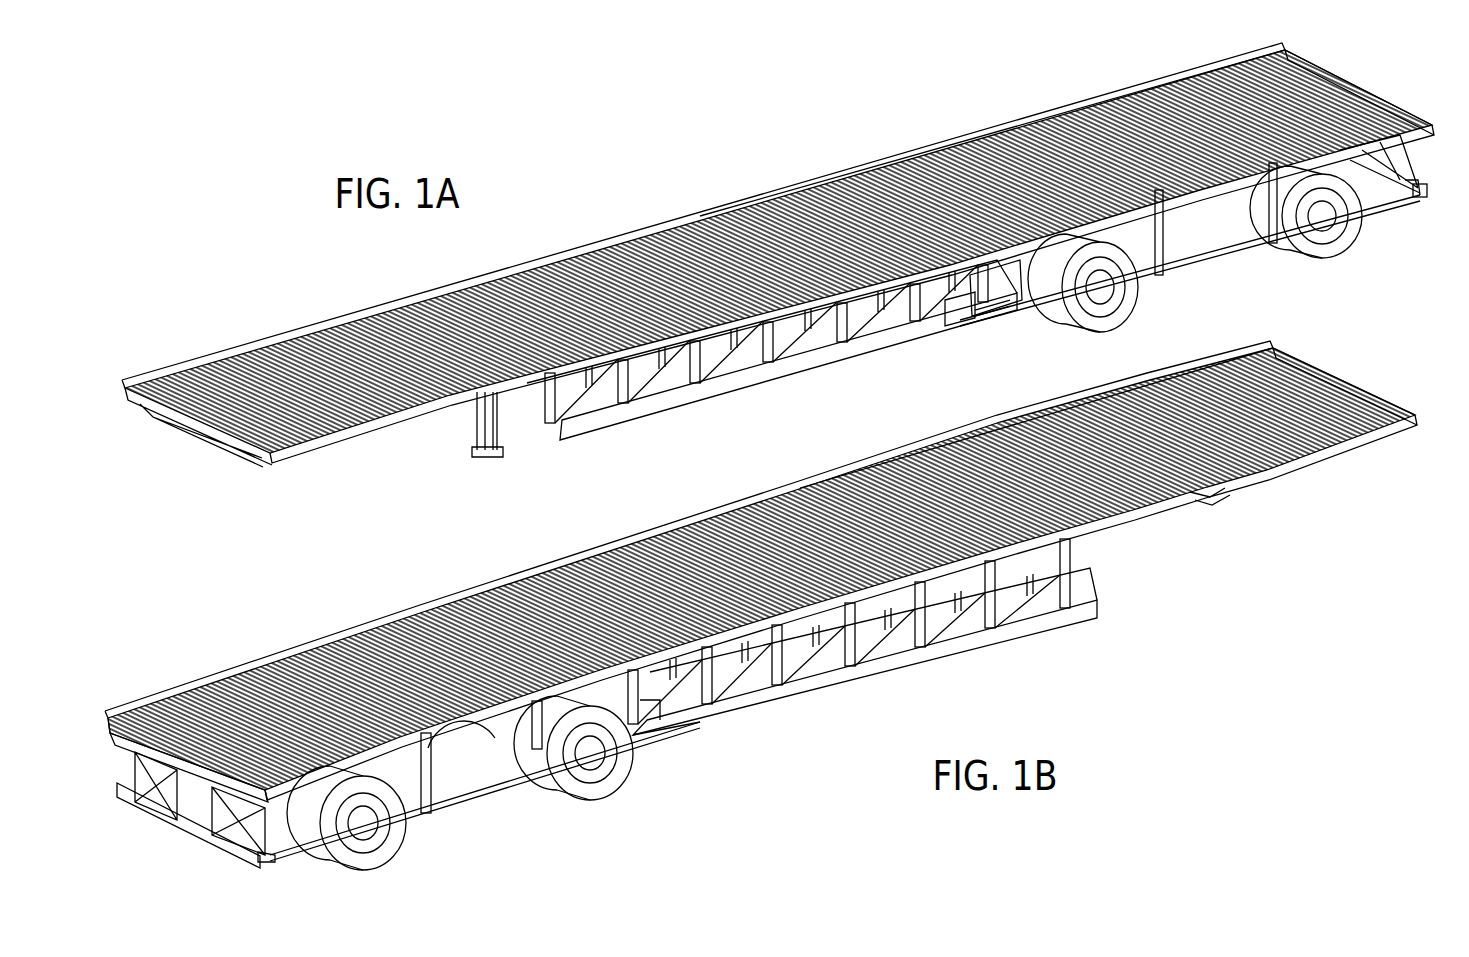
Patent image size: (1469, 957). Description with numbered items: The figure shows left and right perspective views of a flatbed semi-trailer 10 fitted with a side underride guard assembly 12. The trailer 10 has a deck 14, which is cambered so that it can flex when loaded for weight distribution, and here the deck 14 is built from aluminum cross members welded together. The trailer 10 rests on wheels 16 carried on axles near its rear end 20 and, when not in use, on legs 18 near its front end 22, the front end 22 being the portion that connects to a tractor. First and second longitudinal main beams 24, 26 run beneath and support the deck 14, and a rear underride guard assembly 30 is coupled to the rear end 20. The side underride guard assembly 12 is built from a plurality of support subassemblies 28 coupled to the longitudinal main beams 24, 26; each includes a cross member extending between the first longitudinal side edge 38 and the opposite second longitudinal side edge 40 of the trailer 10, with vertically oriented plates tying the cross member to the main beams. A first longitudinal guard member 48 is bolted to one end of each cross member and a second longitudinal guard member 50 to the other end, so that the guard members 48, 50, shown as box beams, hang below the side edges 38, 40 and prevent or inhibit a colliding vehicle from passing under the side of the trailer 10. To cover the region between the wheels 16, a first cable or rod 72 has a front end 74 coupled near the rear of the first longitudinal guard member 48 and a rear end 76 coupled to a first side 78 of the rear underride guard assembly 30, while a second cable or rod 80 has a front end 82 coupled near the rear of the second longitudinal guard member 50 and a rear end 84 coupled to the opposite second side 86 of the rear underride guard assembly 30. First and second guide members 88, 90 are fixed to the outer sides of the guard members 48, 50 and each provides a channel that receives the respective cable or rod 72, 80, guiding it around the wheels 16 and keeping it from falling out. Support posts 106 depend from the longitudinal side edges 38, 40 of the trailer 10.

In FIG. 1A, the flatbed semi-trailer 10 is at (922, 122).
In FIG. 1B, the flatbed semi-trailer 10 is at (1267, 478).
In FIG. 1A, the side underride guard assembly 12 is at (1000, 330).
In FIG. 1B, the side underride guard assembly 12 is at (1084, 609).
In FIG. 1A, the deck 14 is at (703, 207).
In FIG. 1B, the deck 14 is at (1302, 362).
In FIG. 1A, the wheels 16 is at (1118, 322).
In FIG. 1B, the wheels 16 is at (386, 860).
In FIG. 1A, the legs 18 is at (487, 458).
In FIG. 1A, the rear end 20 is at (1313, 62).
In FIG. 1B, the rear end 20 is at (143, 690).
In FIG. 1A, the front end 22 is at (250, 470).
In FIG. 1B, the front end 22 is at (1408, 440).
In FIG. 1B, the first longitudinal main beam 24 is at (1117, 527).
In FIG. 1A, the second longitudinal main beam 26 is at (797, 345).
In FIG. 1A, the support subassemblies 28 is at (535, 428).
In FIG. 1B, the support subassemblies 28 is at (645, 730).
In FIG. 1A, the rear underride guard assembly 30 is at (1424, 160).
In FIG. 1B, the rear underride guard assembly 30 is at (170, 828).
In FIG. 1A, the first longitudinal side edge 38 is at (270, 328).
In FIG. 1B, the first longitudinal side edge 38 is at (1217, 487).
In FIG. 1A, the second longitudinal side edge 40 is at (363, 440).
In FIG. 1B, the second longitudinal side edge 40 is at (338, 632).
In FIG. 1B, the first longitudinal guard member 48 is at (920, 640).
In FIG. 1A, the second longitudinal guard member 50 is at (697, 395).
In FIG. 1B, the first cable or rod 72 is at (482, 797).
In FIG. 1B, the front end of first cable or rod 74 is at (715, 722).
In FIG. 1B, the rear end of first cable or rod 76 is at (262, 862).
In FIG. 1B, the first side of rear underride guard assembly 78 is at (233, 863).
In FIG. 1A, the second cable or rod 80 is at (1214, 257).
In FIG. 1A, the front end of second cable or rod 82 is at (947, 318).
In FIG. 1A, the rear end of second cable or rod 84 is at (1418, 197).
In FIG. 1A, the second side of rear underride guard assembly 86 is at (1432, 190).
In FIG. 1B, the first guide member 88 is at (677, 747).
In FIG. 1A, the second guide member 90 is at (1008, 320).
In FIG. 1A, the support posts 106 is at (1165, 227).
In FIG. 1B, the support posts 106 is at (432, 760).